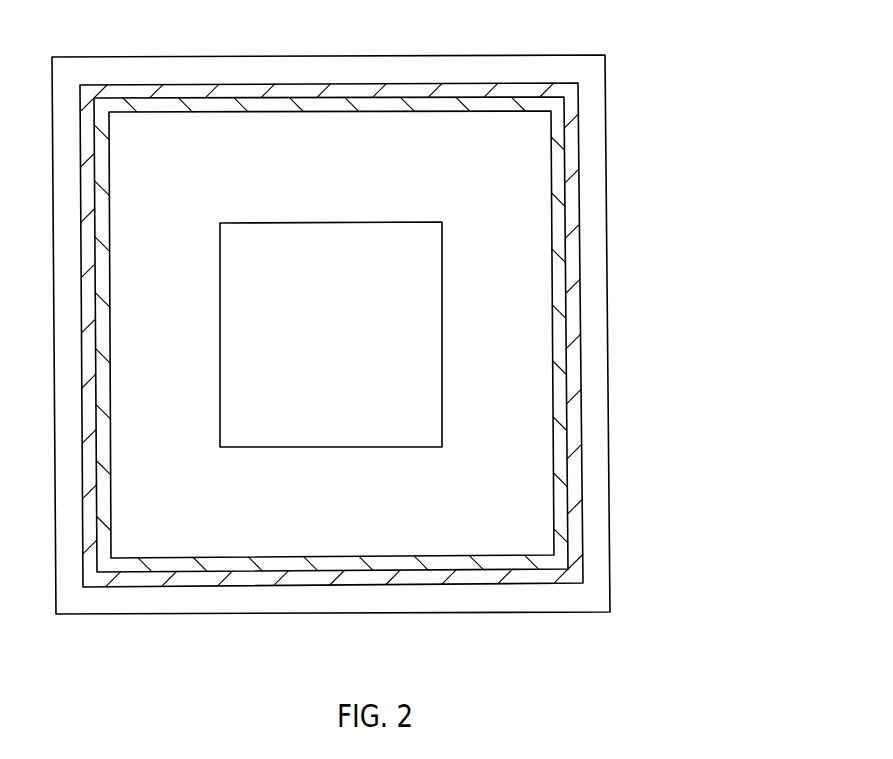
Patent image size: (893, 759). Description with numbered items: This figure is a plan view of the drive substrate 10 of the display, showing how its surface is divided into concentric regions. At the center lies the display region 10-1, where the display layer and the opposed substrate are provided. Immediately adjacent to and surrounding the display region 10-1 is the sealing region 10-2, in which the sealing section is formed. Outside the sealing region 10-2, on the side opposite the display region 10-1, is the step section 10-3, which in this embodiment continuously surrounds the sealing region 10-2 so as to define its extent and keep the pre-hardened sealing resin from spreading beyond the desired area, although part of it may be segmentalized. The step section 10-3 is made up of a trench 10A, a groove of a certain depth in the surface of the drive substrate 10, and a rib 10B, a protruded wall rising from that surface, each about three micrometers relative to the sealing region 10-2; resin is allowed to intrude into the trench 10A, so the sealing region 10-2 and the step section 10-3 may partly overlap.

The drive substrate 10 is at (672, 80).
The display region 10-1 is at (332, 388).
The sealing region 10-2 is at (532, 167).
The step section 10-3 is at (414, 335).
The trench 10A is at (562, 222).
The rib 10B is at (572, 250).